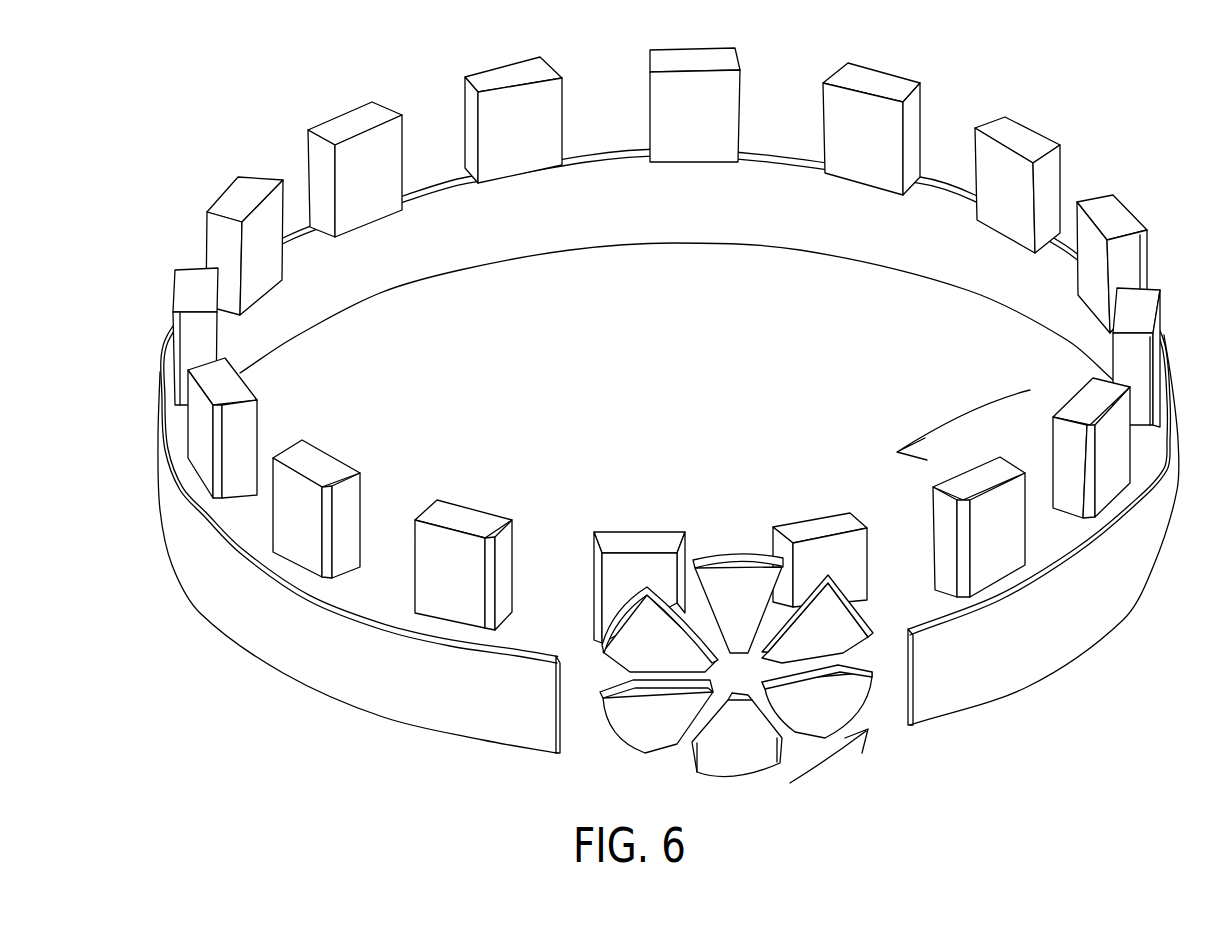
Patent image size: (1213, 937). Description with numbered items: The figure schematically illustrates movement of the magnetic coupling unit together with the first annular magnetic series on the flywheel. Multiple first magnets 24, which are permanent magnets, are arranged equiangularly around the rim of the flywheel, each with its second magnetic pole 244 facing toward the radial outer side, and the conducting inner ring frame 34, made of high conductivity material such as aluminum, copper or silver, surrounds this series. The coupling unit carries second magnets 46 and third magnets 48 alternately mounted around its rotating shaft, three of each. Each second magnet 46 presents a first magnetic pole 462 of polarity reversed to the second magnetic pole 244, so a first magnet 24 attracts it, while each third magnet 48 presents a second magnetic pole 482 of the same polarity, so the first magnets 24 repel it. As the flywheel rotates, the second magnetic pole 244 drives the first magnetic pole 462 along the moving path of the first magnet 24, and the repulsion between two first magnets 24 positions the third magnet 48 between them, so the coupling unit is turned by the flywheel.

The first magnet 24 is at (635, 537).
The second magnetic pole 244 is at (615, 560).
The conducting inner ring frame 34 is at (1083, 613).
The second magnet 46 is at (618, 618).
The first magnetic pole 462 is at (615, 612).
The third magnet 48 is at (738, 552).
The second magnetic pole 482 is at (718, 553).